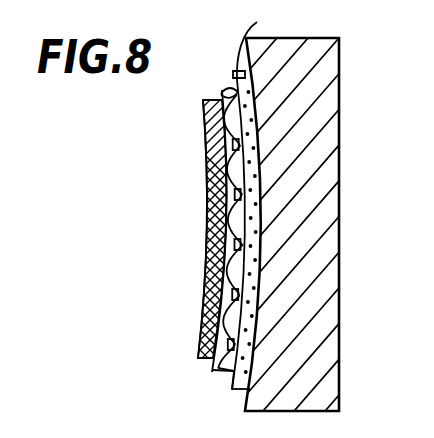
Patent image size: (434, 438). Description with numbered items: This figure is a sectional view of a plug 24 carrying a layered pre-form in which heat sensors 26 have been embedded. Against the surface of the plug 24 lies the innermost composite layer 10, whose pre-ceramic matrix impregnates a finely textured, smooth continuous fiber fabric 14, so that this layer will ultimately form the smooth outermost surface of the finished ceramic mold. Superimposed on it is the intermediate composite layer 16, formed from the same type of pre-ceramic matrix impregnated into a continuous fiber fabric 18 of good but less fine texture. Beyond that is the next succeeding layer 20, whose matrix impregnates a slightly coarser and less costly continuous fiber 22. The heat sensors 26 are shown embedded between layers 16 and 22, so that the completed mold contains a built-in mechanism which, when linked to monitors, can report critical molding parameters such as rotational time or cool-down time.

The composite layer 10 is at (235, 78).
The continuous fiber fabric 14 is at (265, 40).
The composite layer 16 is at (223, 378).
The continuous fiber fabric 18 is at (233, 78).
The layer 20 is at (208, 357).
The continuous fiber 22 is at (208, 172).
The plug 24 is at (331, 150).
The heat sensors 26 is at (210, 101).